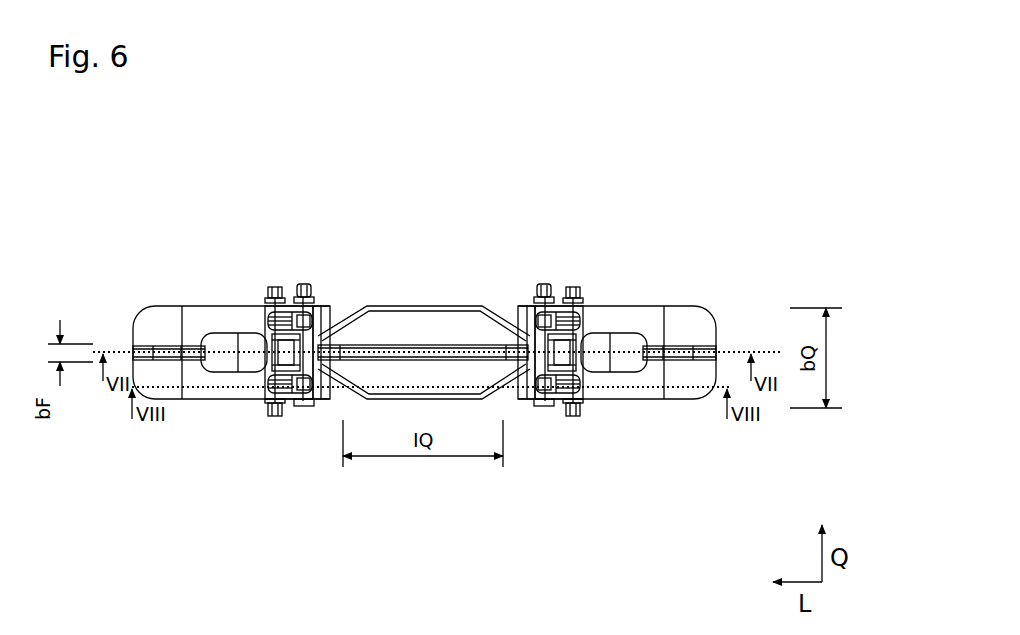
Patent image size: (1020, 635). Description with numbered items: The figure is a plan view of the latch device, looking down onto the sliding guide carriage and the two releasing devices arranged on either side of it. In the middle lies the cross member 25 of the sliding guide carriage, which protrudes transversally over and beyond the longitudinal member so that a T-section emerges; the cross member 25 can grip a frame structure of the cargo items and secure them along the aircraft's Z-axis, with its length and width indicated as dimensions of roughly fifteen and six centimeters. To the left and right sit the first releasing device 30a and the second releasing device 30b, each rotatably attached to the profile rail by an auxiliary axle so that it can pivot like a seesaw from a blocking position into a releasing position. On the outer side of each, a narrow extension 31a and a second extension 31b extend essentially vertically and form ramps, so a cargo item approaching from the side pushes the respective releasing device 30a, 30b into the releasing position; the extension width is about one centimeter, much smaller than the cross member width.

The first releasing device 30a is at (193, 337).
The second releasing device 30b is at (685, 326).
The first extension 31a is at (181, 353).
The second extension 31b is at (662, 354).
The cross member 25 is at (336, 372).